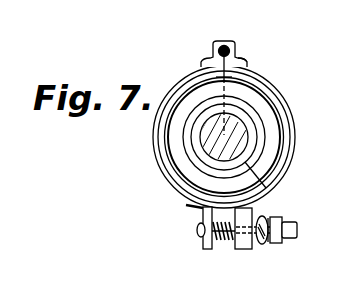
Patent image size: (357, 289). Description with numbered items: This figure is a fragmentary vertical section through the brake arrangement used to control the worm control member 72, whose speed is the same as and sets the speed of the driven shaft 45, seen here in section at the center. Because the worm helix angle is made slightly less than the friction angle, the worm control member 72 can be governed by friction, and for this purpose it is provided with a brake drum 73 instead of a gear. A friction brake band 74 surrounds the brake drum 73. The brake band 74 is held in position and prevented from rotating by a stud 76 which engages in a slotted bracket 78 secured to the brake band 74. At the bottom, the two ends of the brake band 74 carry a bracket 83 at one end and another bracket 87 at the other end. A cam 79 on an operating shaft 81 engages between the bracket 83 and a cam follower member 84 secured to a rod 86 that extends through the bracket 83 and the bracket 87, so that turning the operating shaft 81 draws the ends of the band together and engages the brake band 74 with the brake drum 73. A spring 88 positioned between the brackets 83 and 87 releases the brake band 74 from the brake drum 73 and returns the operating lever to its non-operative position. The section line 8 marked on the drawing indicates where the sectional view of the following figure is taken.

The section line 8- 8 is at (224, 42).
The driven shaft 45 is at (204, 150).
The worm control member 72 is at (263, 157).
The brake drum 73 is at (272, 118).
The friction brake band 74 is at (153, 138).
The stud 76 is at (227, 47).
The slotted bracket 78 is at (245, 60).
The cam 79 is at (262, 246).
The operating shaft 81 is at (274, 244).
The bracket 83 is at (246, 249).
The cam follower member 84 is at (279, 219).
The rod 86 is at (197, 228).
The bracket 87 is at (203, 247).
The spring 88 is at (223, 244).